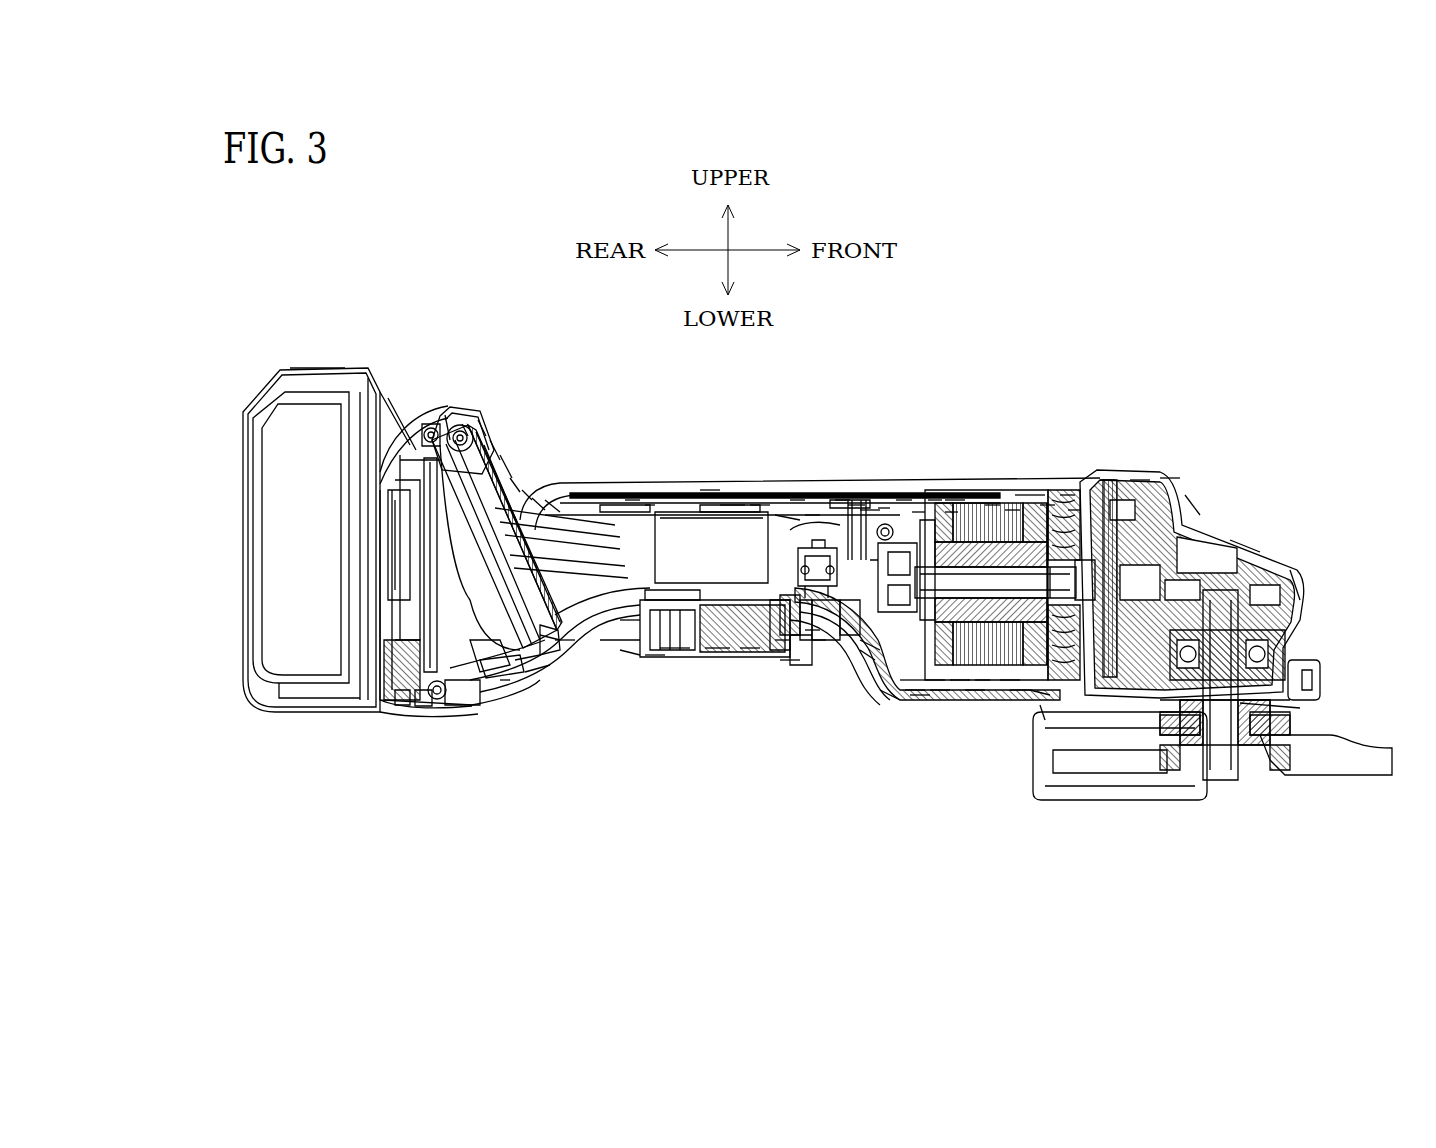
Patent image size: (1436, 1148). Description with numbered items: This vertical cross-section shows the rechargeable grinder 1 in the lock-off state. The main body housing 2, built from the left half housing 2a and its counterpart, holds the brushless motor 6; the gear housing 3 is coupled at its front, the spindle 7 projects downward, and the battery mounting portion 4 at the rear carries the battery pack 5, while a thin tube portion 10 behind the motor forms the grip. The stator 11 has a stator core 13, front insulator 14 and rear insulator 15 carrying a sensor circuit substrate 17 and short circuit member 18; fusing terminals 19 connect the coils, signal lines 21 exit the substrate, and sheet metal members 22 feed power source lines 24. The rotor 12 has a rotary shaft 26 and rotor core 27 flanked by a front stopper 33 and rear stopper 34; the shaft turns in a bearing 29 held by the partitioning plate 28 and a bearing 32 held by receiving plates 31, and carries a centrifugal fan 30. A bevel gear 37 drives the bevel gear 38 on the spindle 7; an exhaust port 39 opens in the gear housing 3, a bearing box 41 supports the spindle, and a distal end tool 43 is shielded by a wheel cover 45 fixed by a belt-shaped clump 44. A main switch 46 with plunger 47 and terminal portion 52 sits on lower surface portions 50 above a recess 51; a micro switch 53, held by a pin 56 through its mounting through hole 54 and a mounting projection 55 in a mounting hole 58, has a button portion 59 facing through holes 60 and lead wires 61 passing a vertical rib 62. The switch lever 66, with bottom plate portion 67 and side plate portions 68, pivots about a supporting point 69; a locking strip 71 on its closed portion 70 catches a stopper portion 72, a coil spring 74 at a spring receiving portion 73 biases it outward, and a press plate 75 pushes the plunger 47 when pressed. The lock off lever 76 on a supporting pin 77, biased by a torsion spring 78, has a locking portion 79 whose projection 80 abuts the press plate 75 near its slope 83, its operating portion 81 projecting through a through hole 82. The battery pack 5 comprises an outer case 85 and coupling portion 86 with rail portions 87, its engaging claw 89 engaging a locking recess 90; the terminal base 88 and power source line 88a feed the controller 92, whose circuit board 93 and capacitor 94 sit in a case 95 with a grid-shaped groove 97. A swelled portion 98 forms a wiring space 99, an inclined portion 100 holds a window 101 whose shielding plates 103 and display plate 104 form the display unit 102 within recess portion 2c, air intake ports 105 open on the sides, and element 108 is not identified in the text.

The rechargeable grinder 1 is at (1008, 308).
The main body housing 2 is at (830, 478).
The half housing 2a is at (640, 500).
The recess portion 2c is at (545, 505).
The gear housing 3 is at (1262, 545).
The battery mounting portion 4 is at (470, 415).
The battery pack 5 is at (322, 368).
The brushless motor 6 is at (972, 492).
The spindle 7 is at (1240, 630).
The thin tube portion 10 is at (995, 585).
The stator 11 is at (1022, 492).
The rotor 12 is at (936, 495).
The stator core 13 is at (992, 500).
The front insulator 14 is at (1062, 492).
The rear insulator 15 is at (952, 505).
The sensor circuit substrate 17 is at (940, 700).
The short circuit member 18 is at (934, 688).
The fusing terminals 19 is at (920, 505).
The signal lines 21 is at (868, 670).
The sheet metal members 22 is at (916, 700).
The power source lines 24 is at (866, 505).
The rotary shaft 26 is at (1085, 555).
The rotor core 27 is at (985, 684).
The partitioning plate 28 is at (1112, 492).
The bearing 29 is at (1140, 482).
The centrifugal fan 30 is at (1108, 480).
The receiving plates 31 is at (904, 495).
The bearing 32 is at (908, 686).
The front stopper 33 is at (1074, 505).
The rear stopper 34 is at (960, 685).
The bevel gear 37 is at (1196, 505).
The bevel gear 38 is at (1300, 595).
The exhaust port 39 is at (1170, 480).
The bearing box 41 is at (1285, 652).
The distal end tool 43 is at (1350, 778).
The belt-shaped clump 44 is at (1322, 685).
The wheel cover 45 is at (1040, 802).
The main switch 46 is at (705, 490).
The plunger 47 is at (730, 505).
The lower surface portions 50 is at (710, 658).
The recess 51 is at (700, 658).
The terminal portion 52 is at (882, 556).
The micro switch 53 is at (818, 510).
The mounting through hole 54 is at (842, 495).
The mounting projection 55 is at (795, 515).
The pin 56 is at (856, 500).
The mounting hole 58 is at (815, 560).
The button portion 59 is at (828, 650).
The through holes 60 is at (850, 645).
The lead wires 61 is at (805, 495).
The vertical rib 62 is at (505, 648).
The switch lever 66 is at (748, 658).
The bottom plate portion 67 is at (1040, 700).
The side plate portions 68 is at (920, 705).
The supporting point 69 is at (1040, 710).
The closed portion 70 is at (645, 660).
The locking strip 71 is at (608, 645).
The stopper portion 72 is at (630, 625).
The spring receiving portion 73 is at (678, 660).
The coil spring 74 is at (658, 660).
The press plate 75 is at (718, 660).
The lock off lever 76 is at (805, 670).
The supporting pin 77 is at (810, 670).
The torsion spring 78 is at (792, 665).
The locking portion 79 is at (790, 665).
The projection 80 is at (780, 650).
The operating portion 81 is at (818, 668).
The through hole 82 is at (775, 655).
The slope 83 is at (752, 585).
The outer case 85 is at (245, 578).
The coupling portion 86 is at (392, 445).
The rail portions 87 is at (395, 548).
The terminal base 88 is at (395, 708).
The power source line 88a is at (445, 700).
The engaging claw 89 is at (430, 424).
The locking recess 90 is at (434, 428).
The controller 92 is at (545, 520).
The circuit board 93 is at (540, 675).
The capacitor 94 is at (555, 650).
The case 95 is at (527, 665).
The grid-shaped groove 97 is at (500, 585).
The swelled portion 98 is at (570, 650).
The space 99 is at (508, 685).
The inclined portion 100 is at (487, 428).
The window 101 is at (498, 450).
The display unit 102 is at (520, 480).
The shielding plates 103 is at (510, 470).
The display plate 104 is at (530, 492).
The air intake ports 105 is at (468, 708).
The nut 108 is at (425, 708).